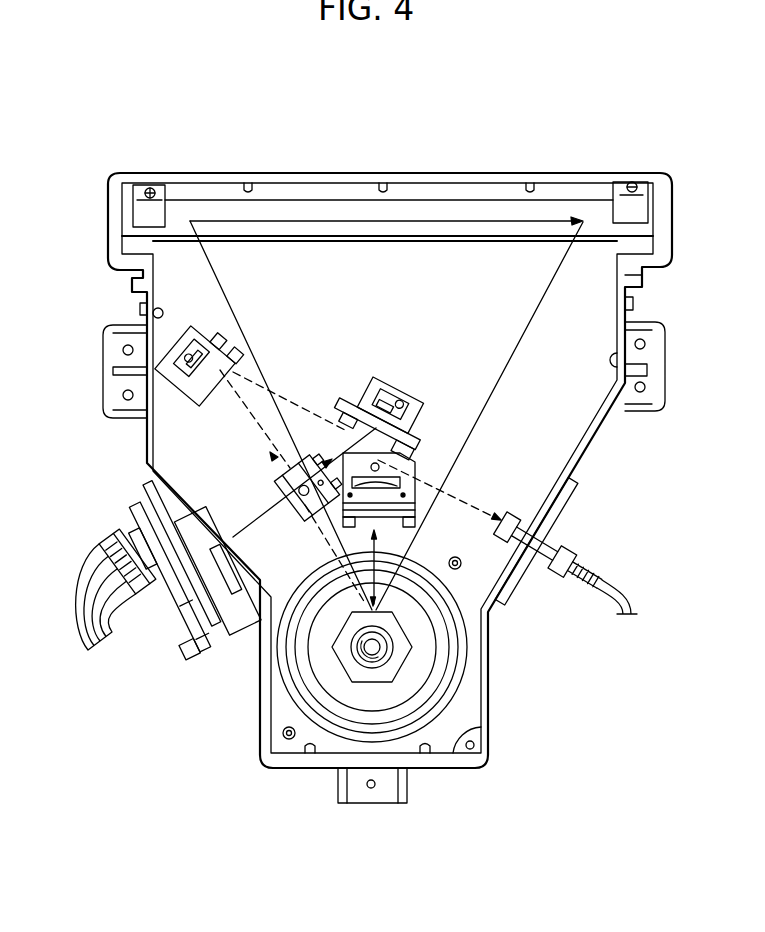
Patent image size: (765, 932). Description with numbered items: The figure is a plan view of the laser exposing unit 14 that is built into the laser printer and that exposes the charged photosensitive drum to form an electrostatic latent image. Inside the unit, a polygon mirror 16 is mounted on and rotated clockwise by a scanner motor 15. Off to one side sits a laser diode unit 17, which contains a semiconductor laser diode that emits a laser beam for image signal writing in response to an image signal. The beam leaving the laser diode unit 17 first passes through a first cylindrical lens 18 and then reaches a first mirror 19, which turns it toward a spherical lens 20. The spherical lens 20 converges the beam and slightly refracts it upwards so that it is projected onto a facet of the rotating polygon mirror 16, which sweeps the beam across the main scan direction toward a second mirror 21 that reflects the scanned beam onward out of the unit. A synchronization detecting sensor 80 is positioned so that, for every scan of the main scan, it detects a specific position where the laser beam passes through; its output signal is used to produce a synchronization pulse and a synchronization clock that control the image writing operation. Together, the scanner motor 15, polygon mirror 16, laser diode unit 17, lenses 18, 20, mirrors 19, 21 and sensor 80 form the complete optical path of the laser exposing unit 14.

The laser exposing unit 14 is at (107, 229).
The scanner motor 15 is at (413, 680).
The polygon mirror 16 is at (340, 662).
The laser diode unit 17 is at (177, 620).
The first cylindrical lens 18 is at (280, 482).
The first mirror 19 is at (400, 433).
The spherical lens 20 is at (417, 478).
The second mirror 21 is at (583, 215).
The synchronization detecting sensor 80 is at (573, 553).